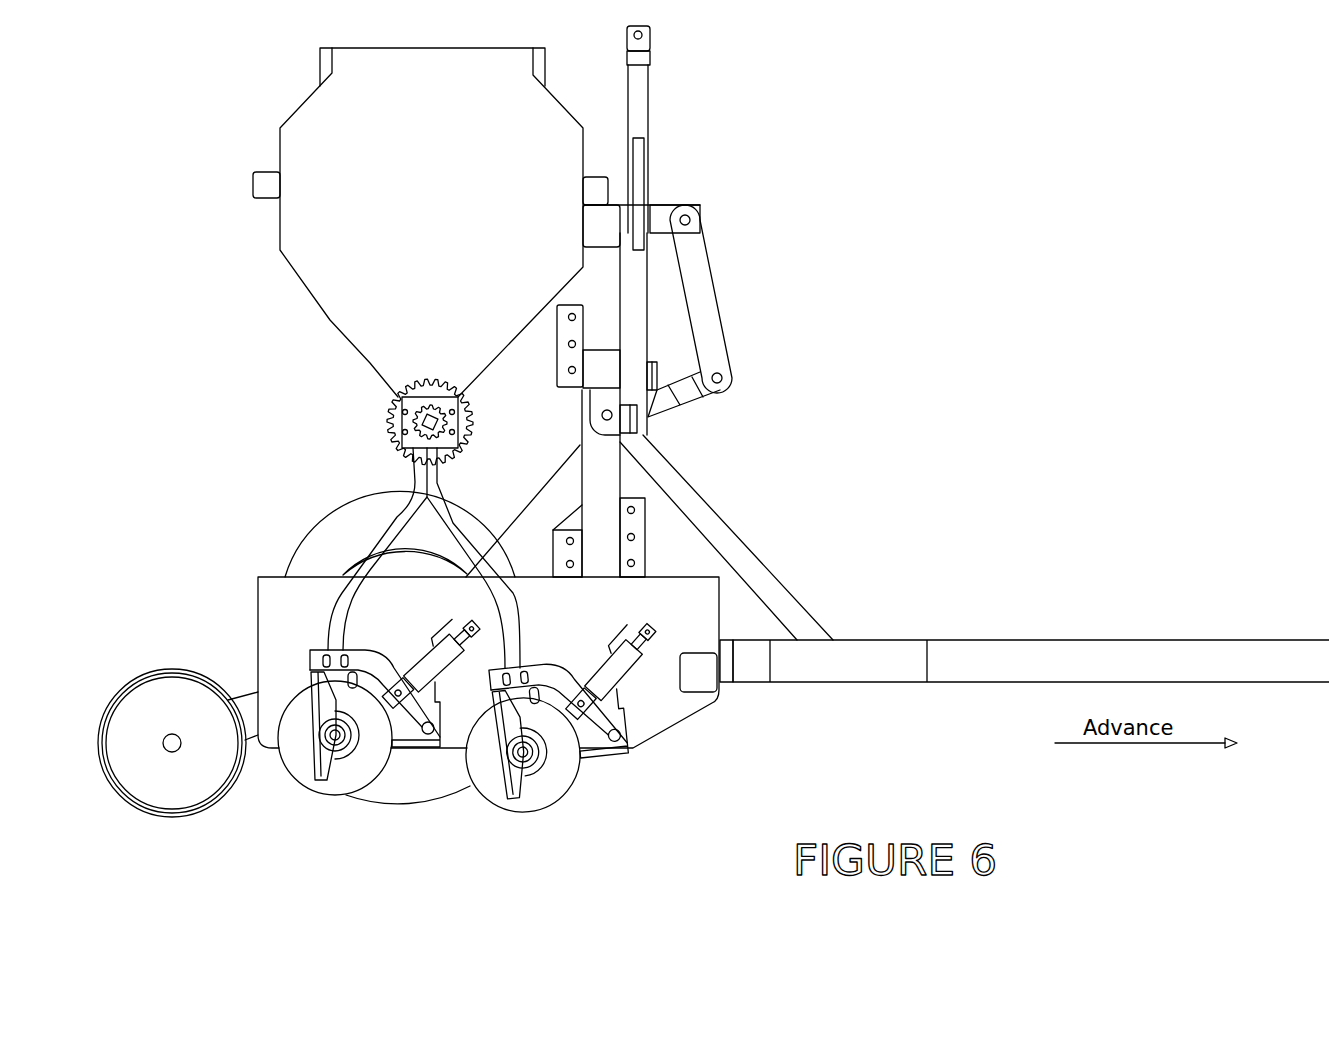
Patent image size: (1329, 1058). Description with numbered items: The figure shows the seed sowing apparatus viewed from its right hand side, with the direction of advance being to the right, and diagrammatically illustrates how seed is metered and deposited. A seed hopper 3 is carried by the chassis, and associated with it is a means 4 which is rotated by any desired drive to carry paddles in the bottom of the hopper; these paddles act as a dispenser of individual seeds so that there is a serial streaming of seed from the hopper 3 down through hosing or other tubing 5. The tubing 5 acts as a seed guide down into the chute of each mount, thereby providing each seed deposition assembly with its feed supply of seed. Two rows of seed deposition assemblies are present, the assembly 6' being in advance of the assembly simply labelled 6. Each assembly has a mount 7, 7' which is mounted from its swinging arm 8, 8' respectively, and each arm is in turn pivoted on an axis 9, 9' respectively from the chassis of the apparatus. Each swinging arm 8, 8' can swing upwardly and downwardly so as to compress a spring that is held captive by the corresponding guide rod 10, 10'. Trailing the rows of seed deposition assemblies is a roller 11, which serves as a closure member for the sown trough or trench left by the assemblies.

The seed hopper 3 is at (313, 272).
The means to carry paddles 4 is at (385, 416).
The tubing 5 is at (398, 532).
The seed deposition assembly 6 is at (346, 677).
The seed deposition assembly 6' is at (576, 719).
The mount 7 is at (324, 762).
The mount 7' is at (522, 768).
The swinging arm 8 is at (341, 632).
The swinging arm 8' is at (558, 750).
The axis 9 is at (430, 771).
The axis 9' is at (625, 763).
The guide rod 10 is at (366, 601).
The guide rod 10' is at (644, 699).
The roller 11 is at (158, 700).